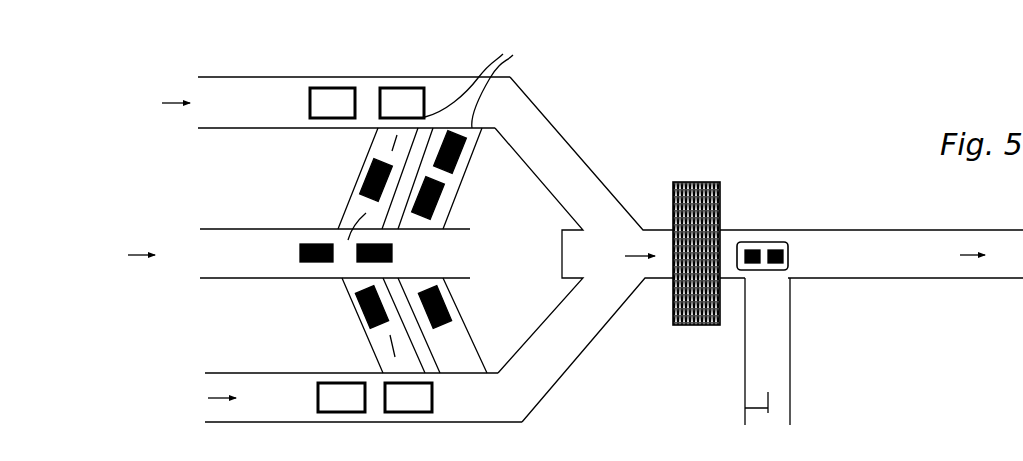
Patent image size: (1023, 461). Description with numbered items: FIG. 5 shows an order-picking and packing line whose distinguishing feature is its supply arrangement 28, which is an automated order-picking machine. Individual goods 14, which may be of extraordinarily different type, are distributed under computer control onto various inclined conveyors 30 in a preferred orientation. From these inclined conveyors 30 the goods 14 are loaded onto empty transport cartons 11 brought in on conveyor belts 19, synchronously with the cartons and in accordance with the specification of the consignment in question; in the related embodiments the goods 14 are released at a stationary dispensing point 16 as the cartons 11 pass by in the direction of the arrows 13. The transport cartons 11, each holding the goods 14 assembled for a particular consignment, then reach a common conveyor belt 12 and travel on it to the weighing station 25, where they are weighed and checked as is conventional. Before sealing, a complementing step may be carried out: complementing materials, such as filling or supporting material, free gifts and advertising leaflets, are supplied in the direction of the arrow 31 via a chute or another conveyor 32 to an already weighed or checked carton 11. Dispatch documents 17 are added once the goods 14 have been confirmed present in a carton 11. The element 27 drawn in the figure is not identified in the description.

The transport cartons 11 is at (233, 92).
The conveyor belt 12 is at (560, 256).
The arrows 13 is at (968, 255).
The goods 14 is at (313, 243).
The dispensing point 16 is at (475, 82).
The dispatch documents 17 is at (363, 441).
The conveyor belts 19 is at (222, 382).
The weighing station 25 is at (697, 172).
The middle channel 27 is at (220, 272).
The supply arrangement 28 is at (93, 197).
The inclined conveyors 30 is at (353, 200).
The arrow 31 is at (745, 408).
The chute or another conveyor 32 is at (782, 366).